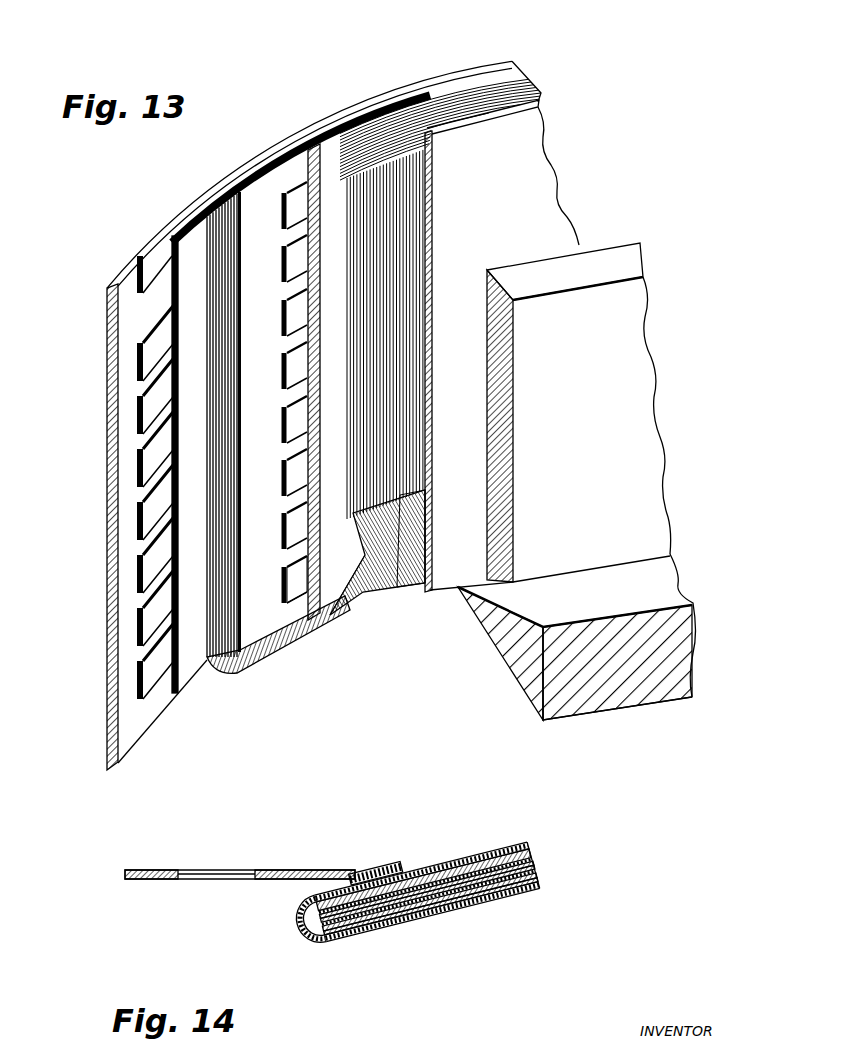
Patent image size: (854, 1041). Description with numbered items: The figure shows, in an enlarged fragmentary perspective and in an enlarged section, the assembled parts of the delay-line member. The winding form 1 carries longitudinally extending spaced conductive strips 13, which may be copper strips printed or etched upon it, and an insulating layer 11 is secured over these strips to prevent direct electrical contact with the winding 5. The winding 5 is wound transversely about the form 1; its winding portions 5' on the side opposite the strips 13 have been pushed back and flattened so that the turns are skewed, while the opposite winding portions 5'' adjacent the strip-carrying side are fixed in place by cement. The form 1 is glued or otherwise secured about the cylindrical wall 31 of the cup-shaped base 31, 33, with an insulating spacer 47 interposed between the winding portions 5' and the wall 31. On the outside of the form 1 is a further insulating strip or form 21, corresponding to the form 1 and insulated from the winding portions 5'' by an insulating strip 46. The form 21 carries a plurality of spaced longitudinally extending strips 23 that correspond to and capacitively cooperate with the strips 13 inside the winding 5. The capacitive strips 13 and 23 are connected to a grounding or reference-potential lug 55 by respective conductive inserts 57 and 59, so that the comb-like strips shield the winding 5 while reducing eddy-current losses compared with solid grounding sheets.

In FIG. 13, the winding form 1 is at (330, 612).
In FIG. 14, the winding form 1 is at (428, 841).
In FIG. 13, the winding 5 is at (458, 350).
In FIG. 13, the winding portions 5' is at (417, 556).
In FIG. 14, the winding portions 5' is at (417, 840).
In FIG. 13, the winding portions 5'' is at (204, 405).
In FIG. 14, the winding portions 5'' is at (459, 858).
In FIG. 13, the insulating layer 11 is at (272, 185).
In FIG. 14, the insulating layer 11 is at (444, 861).
In FIG. 13, the conductive strips 13 is at (283, 590).
In FIG. 14, the conductive strips 13 is at (448, 845).
In FIG. 13, the insulating strip or form 21 is at (107, 705).
In FIG. 14, the insulating strip or form 21 is at (439, 938).
In FIG. 13, the strips 23 is at (140, 623).
In FIG. 14, the strips 23 is at (455, 897).
In FIG. 13, the cylindrical wall 31 is at (592, 258).
In FIG. 13, the cup-shaped base 33 is at (672, 590).
In FIG. 13, the insulating strip 46 is at (195, 670).
In FIG. 14, the insulating strip 46 is at (456, 876).
In FIG. 13, the insulating spacer 47 is at (547, 150).
In FIG. 14, the insulating spacer 47 is at (414, 843).
In FIG. 14, the grounding lug 55 is at (273, 870).
In FIG. 14, the conductive insert 57 is at (301, 940).
In FIG. 14, the conductive insert 59 is at (373, 841).